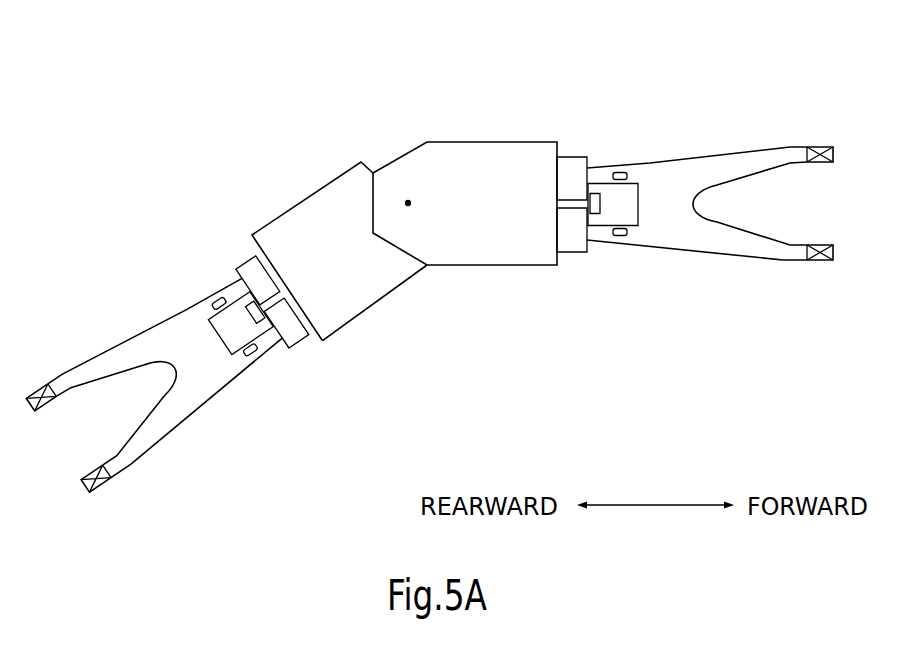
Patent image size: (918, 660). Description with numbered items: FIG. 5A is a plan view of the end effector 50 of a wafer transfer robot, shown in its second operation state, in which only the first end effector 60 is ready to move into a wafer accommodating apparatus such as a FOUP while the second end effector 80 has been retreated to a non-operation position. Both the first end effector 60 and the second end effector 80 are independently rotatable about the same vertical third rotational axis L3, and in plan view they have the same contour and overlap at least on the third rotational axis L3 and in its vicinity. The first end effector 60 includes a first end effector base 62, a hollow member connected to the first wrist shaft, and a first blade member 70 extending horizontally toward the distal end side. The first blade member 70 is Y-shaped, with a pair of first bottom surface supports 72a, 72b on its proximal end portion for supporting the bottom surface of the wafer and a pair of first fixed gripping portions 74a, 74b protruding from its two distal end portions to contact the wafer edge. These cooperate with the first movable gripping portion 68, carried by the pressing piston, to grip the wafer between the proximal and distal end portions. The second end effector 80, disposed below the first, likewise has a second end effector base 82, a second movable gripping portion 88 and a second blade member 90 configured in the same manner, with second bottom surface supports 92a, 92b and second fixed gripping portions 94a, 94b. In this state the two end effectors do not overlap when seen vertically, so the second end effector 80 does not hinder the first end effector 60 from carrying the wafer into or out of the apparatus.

The end effector 50 is at (101, 64).
The first end effector 60 is at (708, 239).
The first end effector base 62 is at (492, 140).
The first movable gripping portion 68 is at (596, 192).
The first blade member 70 is at (683, 248).
The first bottom surface support 72a is at (622, 172).
The first bottom surface support 72b is at (618, 237).
The first fixed gripping portion 74a is at (806, 147).
The first fixed gripping portion 74b is at (812, 261).
The second end effector 80 is at (174, 376).
The second end effector base 82 is at (307, 197).
The second movable gripping portion 88 is at (265, 333).
The second blade member 90 is at (165, 437).
The second bottom surface support 92a is at (253, 355).
The second bottom surface support 92b is at (219, 297).
The second fixed gripping portion 94a is at (116, 486).
The second fixed gripping portion 94b is at (55, 380).
The third rotational axis L3 is at (410, 203).